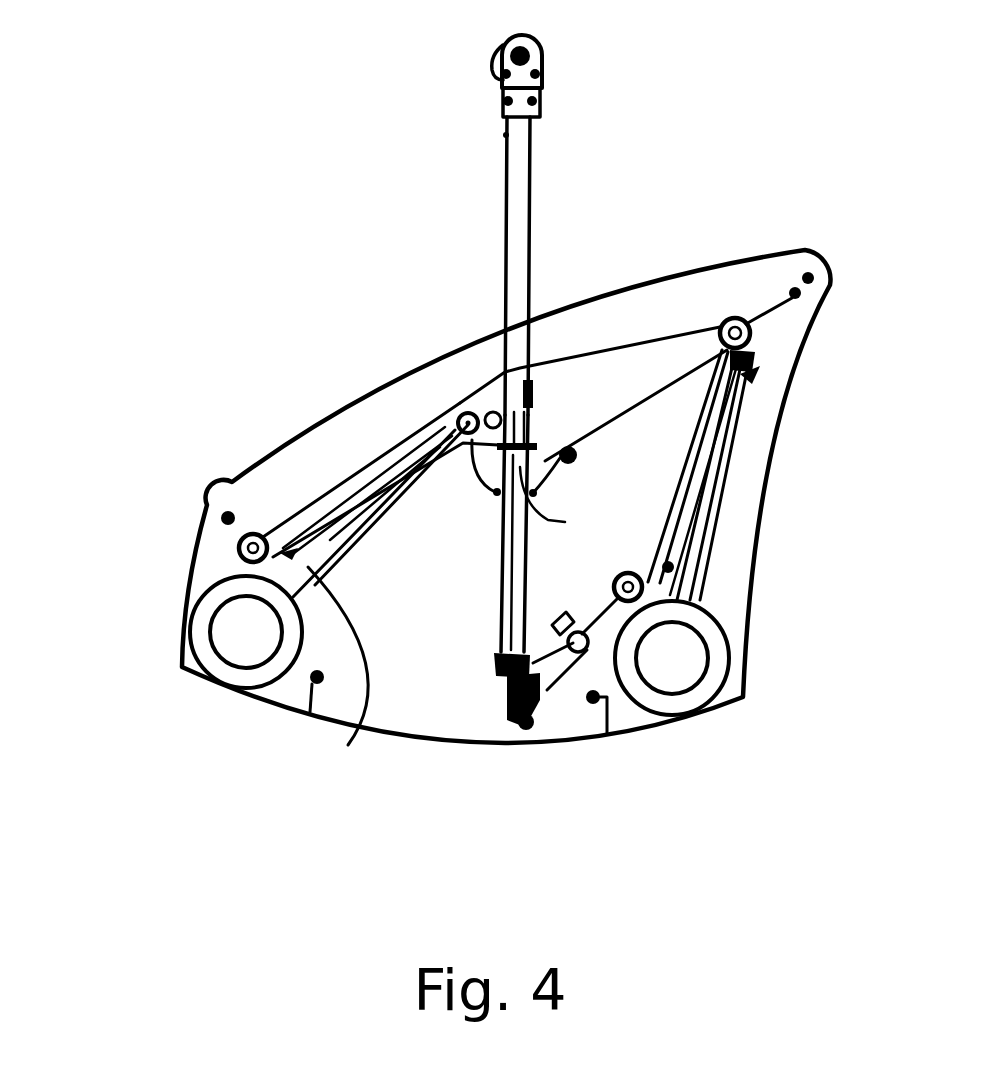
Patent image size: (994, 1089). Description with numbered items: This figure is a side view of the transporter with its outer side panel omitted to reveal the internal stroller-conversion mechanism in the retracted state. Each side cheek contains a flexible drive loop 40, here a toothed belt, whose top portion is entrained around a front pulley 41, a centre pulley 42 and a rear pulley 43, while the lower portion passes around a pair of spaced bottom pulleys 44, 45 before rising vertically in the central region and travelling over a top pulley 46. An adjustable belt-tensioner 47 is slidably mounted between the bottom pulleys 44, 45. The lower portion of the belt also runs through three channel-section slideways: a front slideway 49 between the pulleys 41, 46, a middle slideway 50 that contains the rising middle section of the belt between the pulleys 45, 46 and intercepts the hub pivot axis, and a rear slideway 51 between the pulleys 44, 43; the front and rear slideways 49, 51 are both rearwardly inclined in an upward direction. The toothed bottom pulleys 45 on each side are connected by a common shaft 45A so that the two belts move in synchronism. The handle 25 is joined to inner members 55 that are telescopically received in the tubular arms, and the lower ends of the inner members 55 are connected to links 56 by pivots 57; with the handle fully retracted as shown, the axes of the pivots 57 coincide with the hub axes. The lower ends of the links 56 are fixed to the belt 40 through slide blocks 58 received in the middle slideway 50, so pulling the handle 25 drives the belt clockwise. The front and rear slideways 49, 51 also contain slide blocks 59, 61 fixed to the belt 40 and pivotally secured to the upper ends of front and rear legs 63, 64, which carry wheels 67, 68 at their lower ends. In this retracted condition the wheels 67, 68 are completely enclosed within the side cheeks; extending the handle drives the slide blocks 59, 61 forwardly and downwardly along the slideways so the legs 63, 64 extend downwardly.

The handle 25 is at (530, 43).
The flexible drive loop 40 is at (698, 325).
The front pulley 41 is at (240, 544).
The centre pulley 42 is at (538, 376).
The rear pulley 43 is at (742, 318).
The bottom pulley 44 is at (643, 588).
The bottom pulley 45 is at (513, 697).
The common shaft 45A is at (510, 687).
The top pulley 46 is at (470, 410).
The adjustable belt-tensioner 47 is at (577, 653).
The front slideway 49 is at (323, 487).
The middle slideway 50 is at (499, 573).
The rear slideway 51 is at (677, 546).
The inner member 55 is at (522, 173).
The link 56 is at (510, 525).
The pivot 57 is at (599, 445).
The slide block 58 is at (494, 656).
The slide block 59 is at (452, 410).
The slide block 61 is at (754, 360).
The front leg 63 is at (348, 745).
The rear leg 64 is at (713, 463).
The wheel 67 is at (200, 637).
The wheel 68 is at (717, 665).